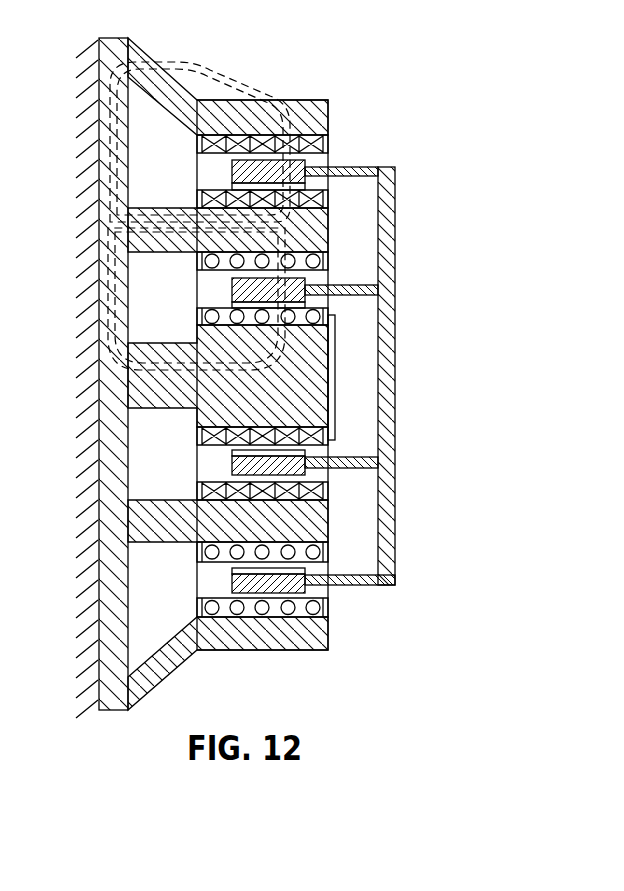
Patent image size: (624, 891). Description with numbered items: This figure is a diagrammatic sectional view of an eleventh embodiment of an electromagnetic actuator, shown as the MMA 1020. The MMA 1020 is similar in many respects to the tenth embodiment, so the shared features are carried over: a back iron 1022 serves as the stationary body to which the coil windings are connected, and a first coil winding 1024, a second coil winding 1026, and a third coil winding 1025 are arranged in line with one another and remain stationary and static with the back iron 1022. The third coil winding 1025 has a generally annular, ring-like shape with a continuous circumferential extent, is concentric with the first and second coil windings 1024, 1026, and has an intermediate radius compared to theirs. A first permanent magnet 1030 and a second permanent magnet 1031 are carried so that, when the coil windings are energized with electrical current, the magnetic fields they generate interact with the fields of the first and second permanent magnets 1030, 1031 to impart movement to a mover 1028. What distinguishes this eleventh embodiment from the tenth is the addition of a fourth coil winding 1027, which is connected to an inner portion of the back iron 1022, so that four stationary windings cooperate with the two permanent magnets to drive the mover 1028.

The MMA 1020 is at (366, 103).
The back iron 1022 is at (396, 226).
The first coil winding 1024 is at (196, 141).
The third coil winding 1025 is at (196, 258).
The second coil winding 1026 is at (196, 316).
The fourth coil winding 1027 is at (333, 228).
The mover 1028 is at (398, 339).
The first permanent magnet 1030 is at (230, 578).
The second permanent magnet 1031 is at (230, 461).